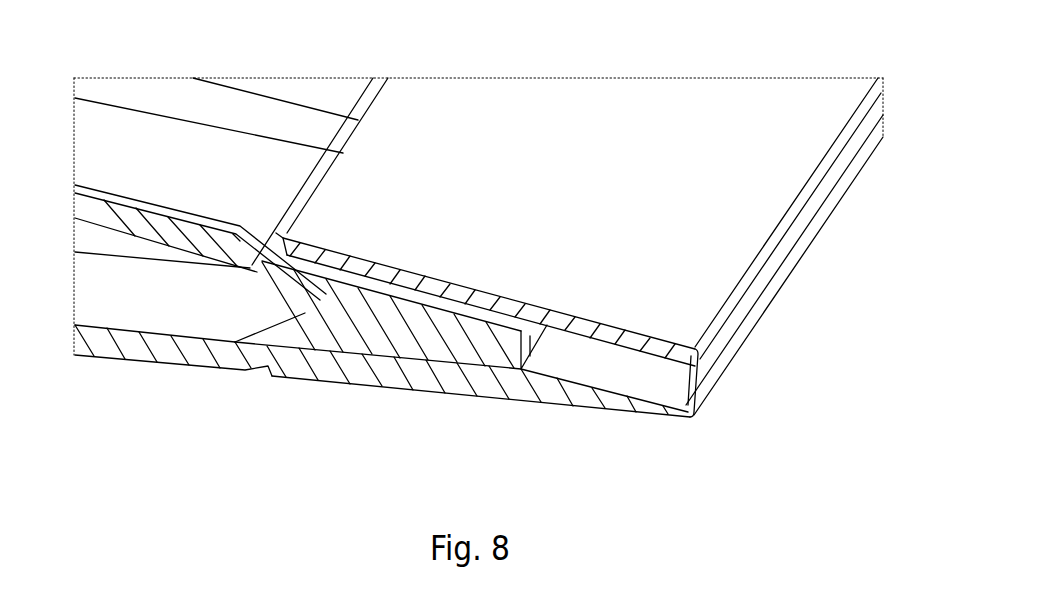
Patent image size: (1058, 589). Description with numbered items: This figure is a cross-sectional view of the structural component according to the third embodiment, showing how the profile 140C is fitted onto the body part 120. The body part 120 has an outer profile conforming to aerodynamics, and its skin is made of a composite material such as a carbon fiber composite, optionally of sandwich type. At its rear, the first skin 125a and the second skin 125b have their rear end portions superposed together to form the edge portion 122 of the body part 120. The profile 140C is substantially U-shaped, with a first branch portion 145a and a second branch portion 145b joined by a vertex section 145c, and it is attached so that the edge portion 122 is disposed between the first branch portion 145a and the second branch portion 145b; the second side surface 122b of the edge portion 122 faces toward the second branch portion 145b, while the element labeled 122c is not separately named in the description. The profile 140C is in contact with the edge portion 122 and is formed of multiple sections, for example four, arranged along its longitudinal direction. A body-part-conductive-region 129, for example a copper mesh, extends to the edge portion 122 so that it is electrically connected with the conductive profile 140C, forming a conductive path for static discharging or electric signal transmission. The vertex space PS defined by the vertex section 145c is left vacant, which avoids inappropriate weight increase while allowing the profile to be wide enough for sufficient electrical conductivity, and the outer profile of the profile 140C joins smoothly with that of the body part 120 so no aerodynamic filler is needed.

The body part 120 is at (235, 64).
The edge portion 122 is at (560, 377).
The second side surface 122b is at (415, 370).
The upper substrate of display panel 122c is at (415, 290).
The first skin 125a is at (242, 253).
The second skin 125b is at (198, 360).
The body-part-conductive-region 129 is at (242, 222).
The first branch portion 145a is at (612, 205).
The second branch portion 145b is at (497, 392).
The vertex section 145c is at (660, 418).
The profile 140C is at (618, 436).
The vertex space PS is at (665, 366).